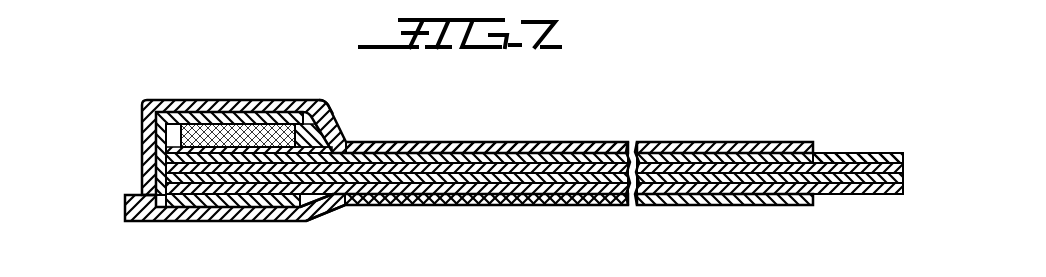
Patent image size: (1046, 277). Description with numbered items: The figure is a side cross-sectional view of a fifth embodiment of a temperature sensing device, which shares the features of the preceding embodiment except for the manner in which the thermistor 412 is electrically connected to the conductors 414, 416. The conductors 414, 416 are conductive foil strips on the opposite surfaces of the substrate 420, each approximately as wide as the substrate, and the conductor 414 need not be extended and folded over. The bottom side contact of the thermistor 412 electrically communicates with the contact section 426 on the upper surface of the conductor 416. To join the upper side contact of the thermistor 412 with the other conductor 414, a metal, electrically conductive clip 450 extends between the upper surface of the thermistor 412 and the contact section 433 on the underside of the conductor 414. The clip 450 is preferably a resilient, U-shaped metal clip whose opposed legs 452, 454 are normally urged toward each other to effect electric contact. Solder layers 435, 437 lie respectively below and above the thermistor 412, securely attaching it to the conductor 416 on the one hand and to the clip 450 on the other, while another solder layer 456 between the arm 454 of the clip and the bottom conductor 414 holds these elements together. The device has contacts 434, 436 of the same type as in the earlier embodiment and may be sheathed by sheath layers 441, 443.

The thermistor 412 is at (300, 146).
The conductor 414 is at (687, 180).
The conductor 416 is at (497, 157).
The substrate 420 is at (503, 170).
The contact section 426 is at (177, 167).
The contact section 433 is at (260, 200).
The contact 434 is at (857, 190).
The solder layer 435 is at (182, 147).
The contact 436 is at (857, 158).
The solder layer 437 is at (322, 110).
The sheath layer 441 is at (593, 203).
The sheath layer 443 is at (483, 116).
The clip 450 is at (157, 127).
The leg 452 is at (258, 124).
The leg 454 is at (207, 198).
The solder layer 456 is at (320, 213).